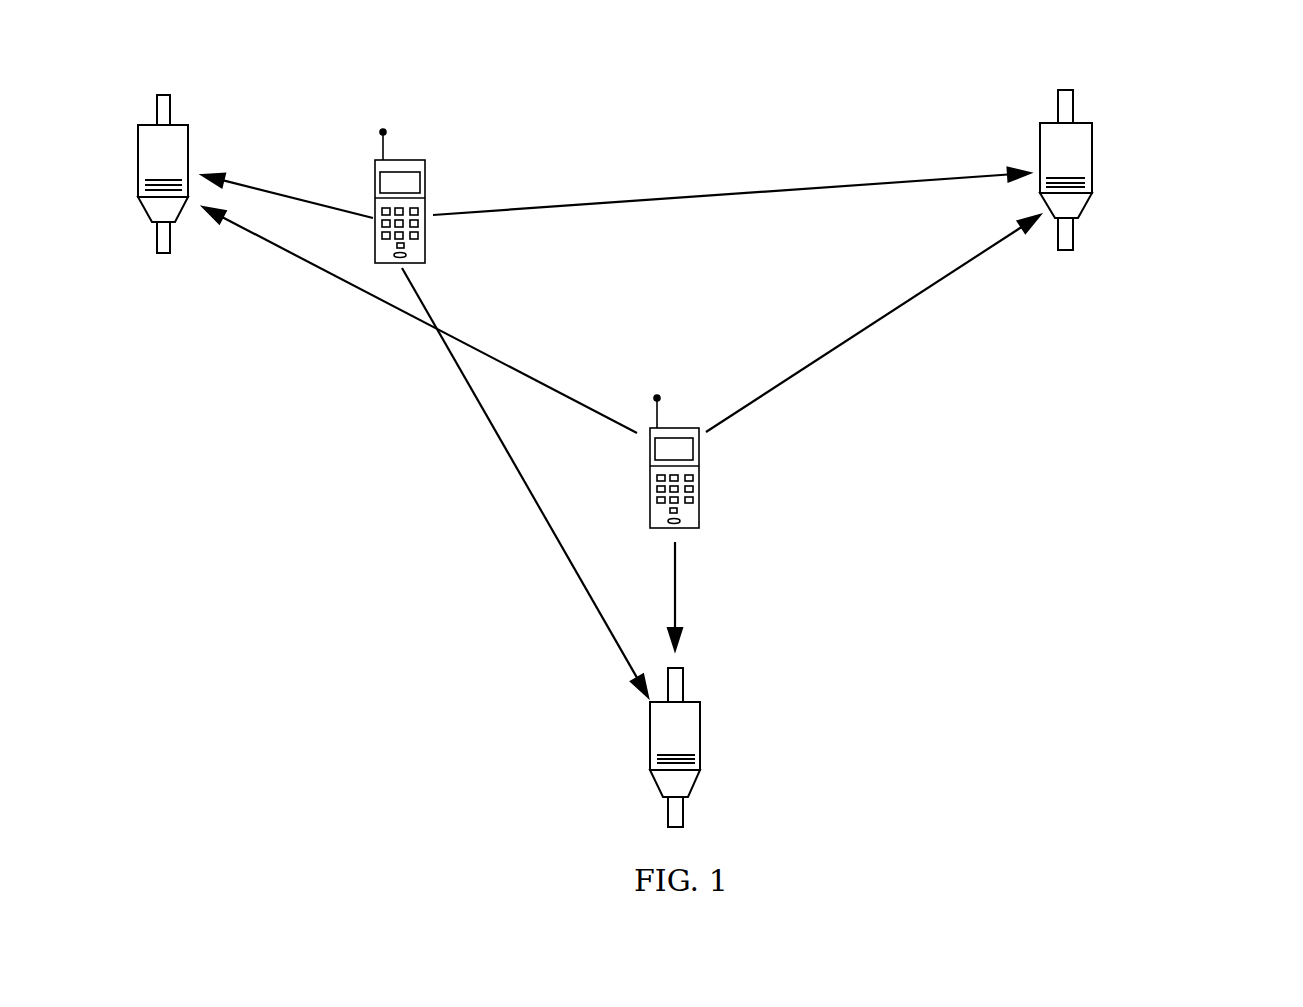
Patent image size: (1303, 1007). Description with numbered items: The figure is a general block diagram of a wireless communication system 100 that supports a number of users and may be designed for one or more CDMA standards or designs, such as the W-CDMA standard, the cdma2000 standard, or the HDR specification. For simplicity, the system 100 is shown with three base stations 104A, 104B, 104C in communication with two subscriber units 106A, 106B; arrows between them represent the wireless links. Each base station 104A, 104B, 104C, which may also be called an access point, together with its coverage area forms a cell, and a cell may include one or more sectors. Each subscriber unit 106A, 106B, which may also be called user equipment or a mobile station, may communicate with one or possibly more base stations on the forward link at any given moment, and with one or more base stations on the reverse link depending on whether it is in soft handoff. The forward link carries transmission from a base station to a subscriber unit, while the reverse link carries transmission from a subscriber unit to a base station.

The wireless communication system 100 is at (1250, 70).
The base station 104A is at (176, 125).
The base station 104B is at (1080, 123).
The base station 104C is at (688, 702).
The subscriber unit 106A is at (400, 160).
The subscriber unit 106B is at (690, 528).